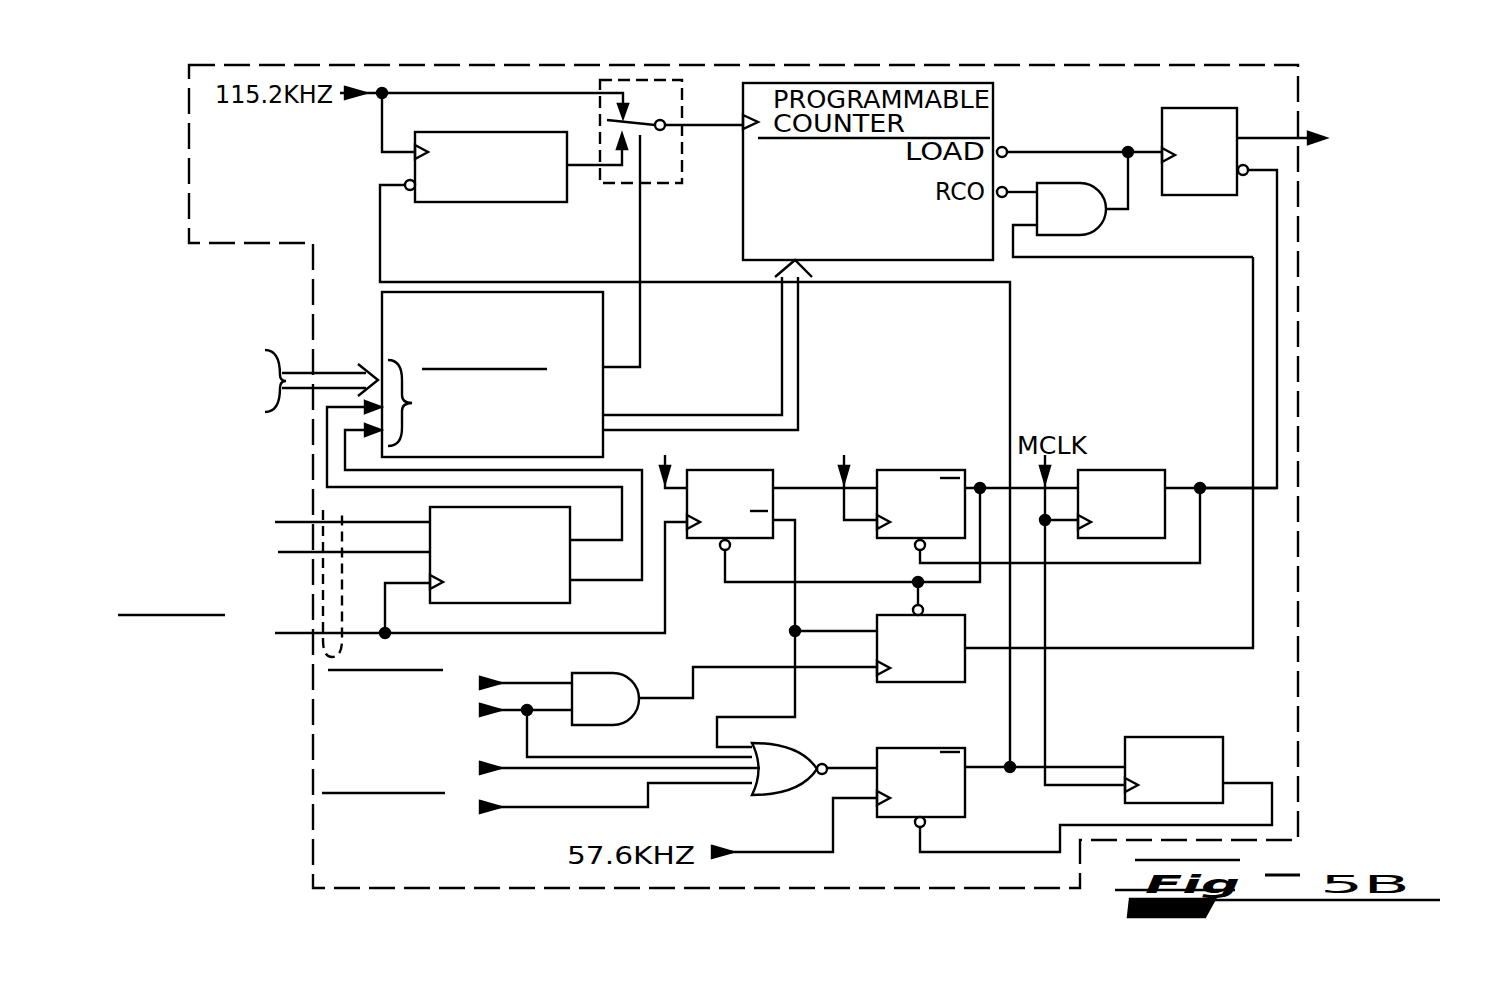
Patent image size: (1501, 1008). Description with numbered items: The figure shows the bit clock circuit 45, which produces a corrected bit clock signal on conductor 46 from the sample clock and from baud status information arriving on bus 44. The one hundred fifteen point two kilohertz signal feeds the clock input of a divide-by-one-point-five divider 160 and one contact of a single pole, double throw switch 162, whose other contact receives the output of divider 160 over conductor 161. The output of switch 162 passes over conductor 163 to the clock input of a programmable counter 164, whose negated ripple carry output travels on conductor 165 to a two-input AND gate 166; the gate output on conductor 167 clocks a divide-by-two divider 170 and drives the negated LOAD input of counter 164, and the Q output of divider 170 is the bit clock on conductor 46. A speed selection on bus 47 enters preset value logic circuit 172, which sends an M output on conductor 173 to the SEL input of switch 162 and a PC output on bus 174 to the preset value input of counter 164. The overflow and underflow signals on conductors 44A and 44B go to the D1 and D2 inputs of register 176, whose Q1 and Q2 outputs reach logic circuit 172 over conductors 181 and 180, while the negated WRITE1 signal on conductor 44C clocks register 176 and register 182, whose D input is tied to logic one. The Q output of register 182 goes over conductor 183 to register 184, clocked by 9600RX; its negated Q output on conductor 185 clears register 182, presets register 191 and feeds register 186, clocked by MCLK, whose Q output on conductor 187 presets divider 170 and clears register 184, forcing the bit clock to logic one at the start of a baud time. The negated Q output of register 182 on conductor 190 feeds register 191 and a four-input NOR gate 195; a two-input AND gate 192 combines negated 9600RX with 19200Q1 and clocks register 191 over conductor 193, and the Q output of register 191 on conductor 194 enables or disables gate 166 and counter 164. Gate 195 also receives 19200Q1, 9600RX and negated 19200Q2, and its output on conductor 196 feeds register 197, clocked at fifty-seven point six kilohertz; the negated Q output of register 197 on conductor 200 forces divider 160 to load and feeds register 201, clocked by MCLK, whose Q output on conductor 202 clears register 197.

The bit clock 45 is at (1298, 78).
The conductor 46 is at (1252, 120).
The bus 47 is at (328, 372).
The divide-by-1.5 divider 160 is at (452, 116).
The divider output line 161 is at (574, 168).
The single pole, double throw switch 162 is at (656, 184).
The conductor 163 is at (697, 103).
The programmable counter 164 is at (743, 237).
The conductor 165 is at (1040, 165).
The two-input AND gate 166 is at (1098, 228).
The conductor 167 is at (1040, 127).
The divide-by-2 divider 170 is at (1218, 108).
The preset value logic circuit 172 is at (382, 322).
The conductor 173 is at (640, 330).
The bus 174 is at (632, 398).
The register 176 is at (445, 604).
The conductor 180 is at (576, 585).
The conductor 181 is at (576, 548).
The register 182 is at (712, 452).
The conductor 183 is at (785, 498).
The register 184 is at (897, 452).
The conductor 185 is at (1003, 488).
The register 186 is at (1102, 452).
The conductor 187 is at (1222, 480).
The conductor 190 is at (797, 546).
The register 191 is at (893, 686).
The two-input AND gate 192 is at (590, 683).
The conductor 193 is at (652, 700).
The conductor 194 is at (1090, 622).
The 4-input NOR gate 195 is at (783, 797).
The conductor 196 is at (866, 768).
The register 197 is at (893, 722).
The conductor 200 is at (979, 775).
The register 201 is at (1152, 718).
The conductor 202 is at (1243, 762).
The bus 44 is at (330, 512).
The conductor 44A is at (348, 525).
The conductor 44B is at (350, 557).
The conductor 44C is at (358, 640).